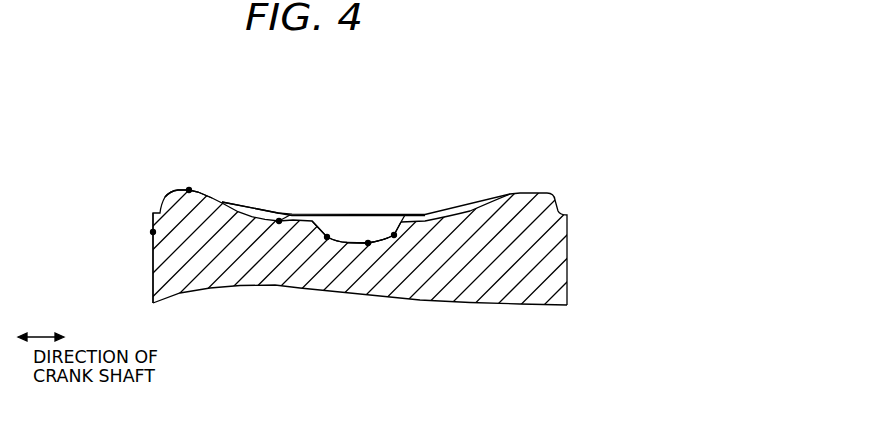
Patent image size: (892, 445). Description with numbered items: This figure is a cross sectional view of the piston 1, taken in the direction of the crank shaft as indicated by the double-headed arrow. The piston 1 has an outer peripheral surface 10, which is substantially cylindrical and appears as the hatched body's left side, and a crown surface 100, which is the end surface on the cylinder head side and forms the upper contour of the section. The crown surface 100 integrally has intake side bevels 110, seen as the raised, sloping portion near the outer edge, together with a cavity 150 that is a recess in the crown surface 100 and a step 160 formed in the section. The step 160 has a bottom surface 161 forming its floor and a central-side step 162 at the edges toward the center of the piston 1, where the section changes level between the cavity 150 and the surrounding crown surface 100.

The piston 1 is at (160, 157).
The outer peripheral surface 10 is at (153, 232).
The crown surface 100 is at (425, 195).
The intake side bevels 110 is at (189, 190).
The cavity 150 is at (279, 221).
The step 160 is at (362, 227).
The bottom surface 161 is at (368, 242).
The central-side step 162 is at (394, 235).